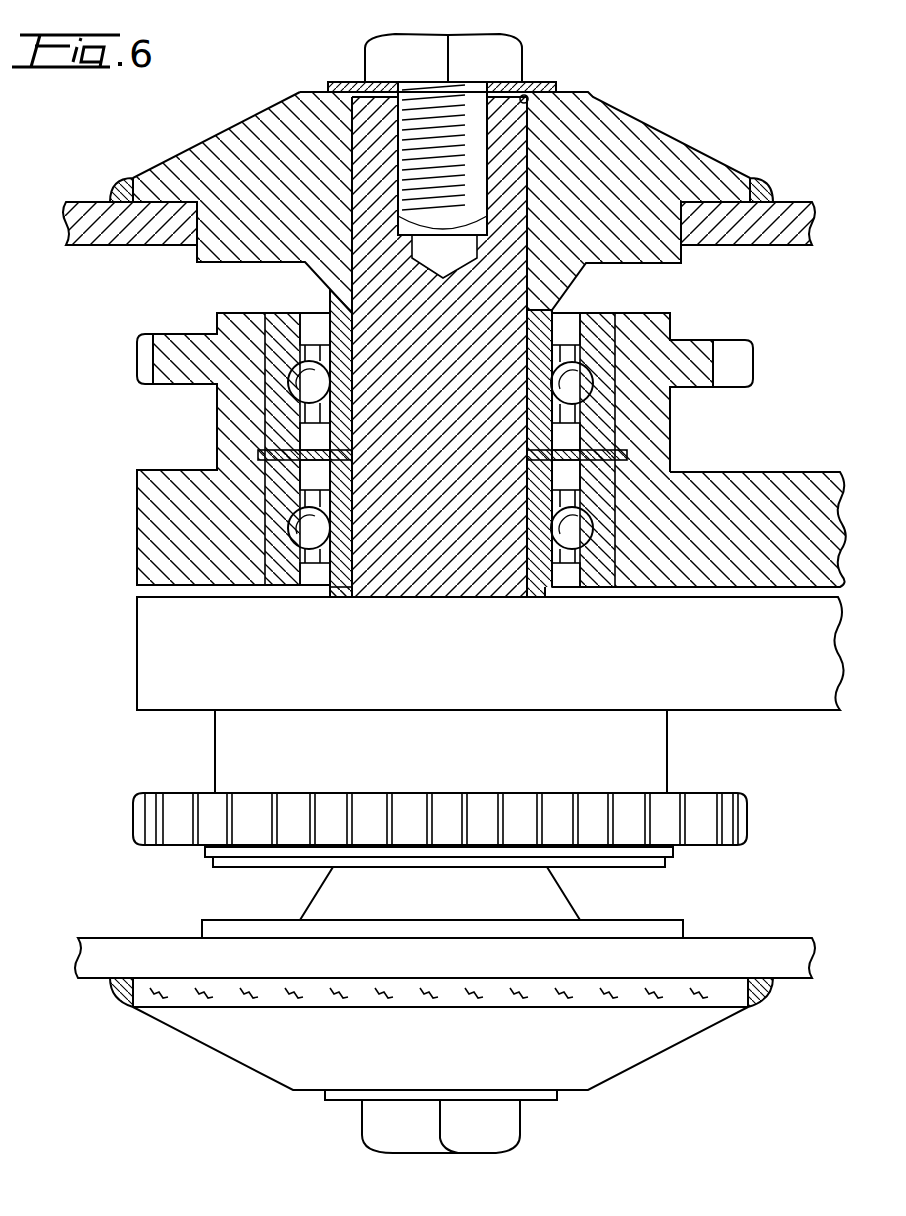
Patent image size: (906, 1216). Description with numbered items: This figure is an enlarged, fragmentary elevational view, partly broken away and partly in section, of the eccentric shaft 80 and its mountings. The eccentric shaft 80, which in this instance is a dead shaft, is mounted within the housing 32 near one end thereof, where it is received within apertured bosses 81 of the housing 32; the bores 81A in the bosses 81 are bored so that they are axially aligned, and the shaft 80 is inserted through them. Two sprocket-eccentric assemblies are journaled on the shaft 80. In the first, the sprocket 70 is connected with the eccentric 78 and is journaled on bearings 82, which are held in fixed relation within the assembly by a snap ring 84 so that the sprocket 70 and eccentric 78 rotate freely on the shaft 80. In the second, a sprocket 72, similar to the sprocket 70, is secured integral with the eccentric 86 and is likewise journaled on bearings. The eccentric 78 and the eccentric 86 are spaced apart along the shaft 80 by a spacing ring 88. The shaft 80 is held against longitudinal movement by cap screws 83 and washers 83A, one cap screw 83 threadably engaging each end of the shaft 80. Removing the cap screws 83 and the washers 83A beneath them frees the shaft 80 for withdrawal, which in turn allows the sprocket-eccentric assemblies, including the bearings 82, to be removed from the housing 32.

The housing 32 is at (790, 210).
The sprocket 70 is at (743, 362).
The sprocket 72 is at (750, 830).
The eccentric 78 is at (807, 487).
The eccentric shaft 80 is at (511, 153).
The apertured boss 81 is at (700, 170).
The bore 81A is at (528, 97).
The bearing 82 is at (588, 380).
The cap screw 83 is at (519, 52).
The washer 83A is at (332, 84).
The snap ring 84 is at (625, 456).
The eccentric 86 is at (784, 712).
The spacing ring 88 is at (340, 600).